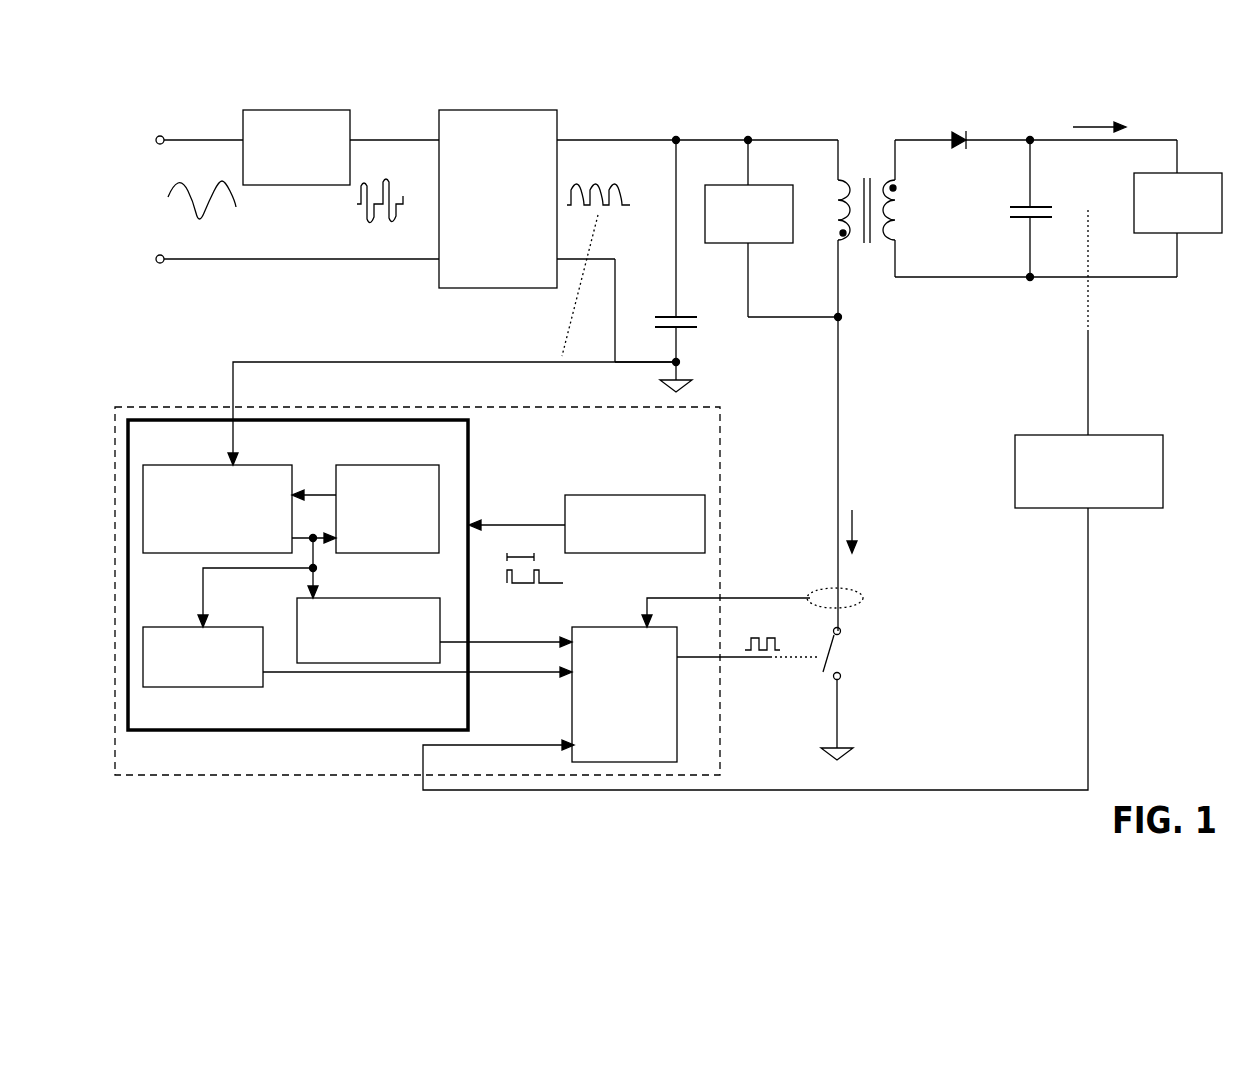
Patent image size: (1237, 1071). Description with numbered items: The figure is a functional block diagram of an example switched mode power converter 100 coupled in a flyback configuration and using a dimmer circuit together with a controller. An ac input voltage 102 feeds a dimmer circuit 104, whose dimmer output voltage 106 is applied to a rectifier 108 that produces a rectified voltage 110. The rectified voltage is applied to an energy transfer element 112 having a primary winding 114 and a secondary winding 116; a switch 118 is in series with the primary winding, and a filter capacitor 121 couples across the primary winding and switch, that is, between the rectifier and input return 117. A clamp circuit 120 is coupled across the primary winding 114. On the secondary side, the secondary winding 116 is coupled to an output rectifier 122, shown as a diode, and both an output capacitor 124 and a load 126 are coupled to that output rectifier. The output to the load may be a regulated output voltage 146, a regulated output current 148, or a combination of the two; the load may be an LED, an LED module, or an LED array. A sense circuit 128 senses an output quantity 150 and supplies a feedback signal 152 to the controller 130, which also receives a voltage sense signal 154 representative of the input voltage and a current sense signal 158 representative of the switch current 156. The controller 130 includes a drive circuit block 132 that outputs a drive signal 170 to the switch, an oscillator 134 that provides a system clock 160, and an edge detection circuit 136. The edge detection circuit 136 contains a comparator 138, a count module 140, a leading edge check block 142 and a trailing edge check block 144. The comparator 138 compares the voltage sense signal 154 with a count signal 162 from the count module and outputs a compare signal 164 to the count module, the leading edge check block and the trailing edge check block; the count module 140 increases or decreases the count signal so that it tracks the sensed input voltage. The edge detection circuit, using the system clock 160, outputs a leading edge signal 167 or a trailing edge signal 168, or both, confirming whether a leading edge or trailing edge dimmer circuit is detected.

The power converter 100 is at (1208, 74).
The ac input voltage VAC 102 is at (136, 171).
The dimmer circuit 104 is at (290, 110).
The dimmer output voltage VDO 106 is at (400, 138).
The rectifier 108 is at (495, 110).
The rectified voltage VRECT 110 is at (605, 138).
The energy transfer element T1 112 is at (871, 385).
The primary winding 114 is at (838, 214).
The secondary winding 116 is at (903, 214).
The input return 117 is at (687, 380).
The switch S1 118 is at (872, 643).
The clamp circuit 120 is at (762, 251).
The filter capacitor CF 121 is at (698, 300).
The rectifier D1 122 is at (958, 124).
The output capacitor C1 124 is at (1002, 226).
The load 126 is at (1186, 168).
The sense circuit 128 is at (1164, 468).
The controller 130 is at (220, 779).
The drive circuit block 132 is at (625, 626).
The oscillator 134 is at (651, 495).
The edge detection circuit 136 is at (170, 416).
The comparator 138 is at (186, 466).
The count module 140 is at (414, 468).
The leading edge check block 142 is at (423, 598).
The trailing edge check block 144 is at (158, 622).
The output voltage VO 146 is at (1074, 198).
The output current IO 148 is at (1097, 94).
The output quantity UO 150 is at (1113, 329).
The feedback signal UFB 152 is at (1136, 606).
The voltage sense signal 154 is at (334, 338).
The switch current ID 156 is at (871, 516).
The current sense signal 158 is at (772, 538).
The system clock 160 is at (533, 469).
The count signal UCOUNT 162 is at (312, 490).
The compare signal 164 is at (212, 595).
The leading edge signal ULE 167 is at (535, 642).
The trailing edge signal UTE 168 is at (534, 682).
The drive signal 170 is at (773, 714).